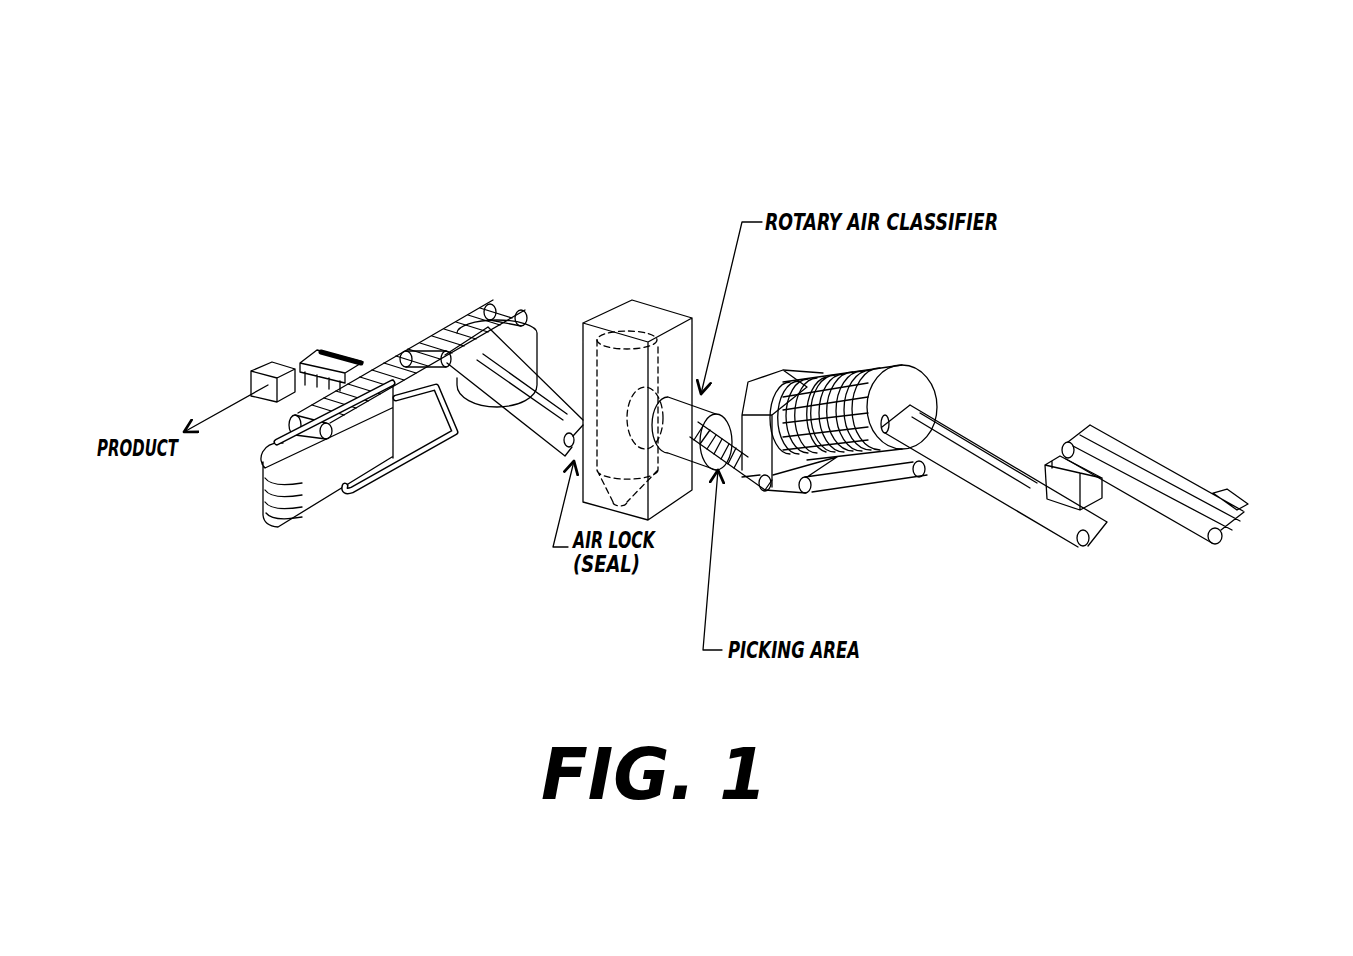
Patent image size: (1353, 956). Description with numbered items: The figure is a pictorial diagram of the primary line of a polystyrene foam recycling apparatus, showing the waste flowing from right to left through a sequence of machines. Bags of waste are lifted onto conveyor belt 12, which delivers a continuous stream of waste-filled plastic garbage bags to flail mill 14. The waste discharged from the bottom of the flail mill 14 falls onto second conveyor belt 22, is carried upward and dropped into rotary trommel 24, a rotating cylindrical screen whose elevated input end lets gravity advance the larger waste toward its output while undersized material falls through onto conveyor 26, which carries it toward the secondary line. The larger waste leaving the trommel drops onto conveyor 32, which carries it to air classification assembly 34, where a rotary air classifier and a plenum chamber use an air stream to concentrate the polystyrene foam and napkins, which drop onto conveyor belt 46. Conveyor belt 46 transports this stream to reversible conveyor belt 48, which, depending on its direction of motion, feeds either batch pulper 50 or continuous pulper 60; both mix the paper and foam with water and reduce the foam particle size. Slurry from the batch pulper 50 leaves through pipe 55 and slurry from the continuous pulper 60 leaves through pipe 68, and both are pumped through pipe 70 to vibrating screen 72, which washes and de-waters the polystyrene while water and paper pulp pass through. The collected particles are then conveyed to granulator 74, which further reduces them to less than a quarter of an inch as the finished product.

The granulator 74 is at (269, 338).
The vibrating screen 72 is at (320, 338).
The batch pulper 50 is at (536, 323).
The reversible conveyor belt 48 is at (465, 309).
The pipe 70 is at (406, 347).
The pipe 55 is at (382, 420).
The pipe 68 is at (400, 452).
The continuous pulper 60 is at (294, 538).
The conveyor belt 46 is at (518, 440).
The air classification assembly 34 is at (646, 299).
The rotary trommel 24 is at (846, 360).
The conveyor 26 is at (877, 493).
The conveyor 32 is at (741, 494).
The second conveyor belt 22 is at (977, 416).
The flail mill 14 is at (1086, 512).
The conveyor belt 12 is at (1183, 374).